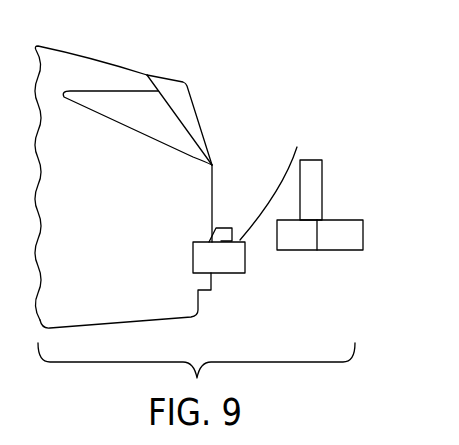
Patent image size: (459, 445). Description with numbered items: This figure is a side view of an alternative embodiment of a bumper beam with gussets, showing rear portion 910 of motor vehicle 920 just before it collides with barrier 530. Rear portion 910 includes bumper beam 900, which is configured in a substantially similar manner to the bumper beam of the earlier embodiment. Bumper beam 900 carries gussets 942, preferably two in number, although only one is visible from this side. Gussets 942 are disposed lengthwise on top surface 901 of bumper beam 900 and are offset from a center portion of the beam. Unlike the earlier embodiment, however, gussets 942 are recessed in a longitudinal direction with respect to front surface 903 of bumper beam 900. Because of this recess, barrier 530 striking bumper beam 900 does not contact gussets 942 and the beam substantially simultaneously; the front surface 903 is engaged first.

The bumper beam 900 is at (195, 202).
The rear portion 910 is at (154, 177).
The motor vehicle 920 is at (200, 82).
The gussets 942 is at (220, 227).
The top surface 901 is at (277, 182).
The front surface 903 is at (245, 270).
The barrier 530 is at (350, 202).